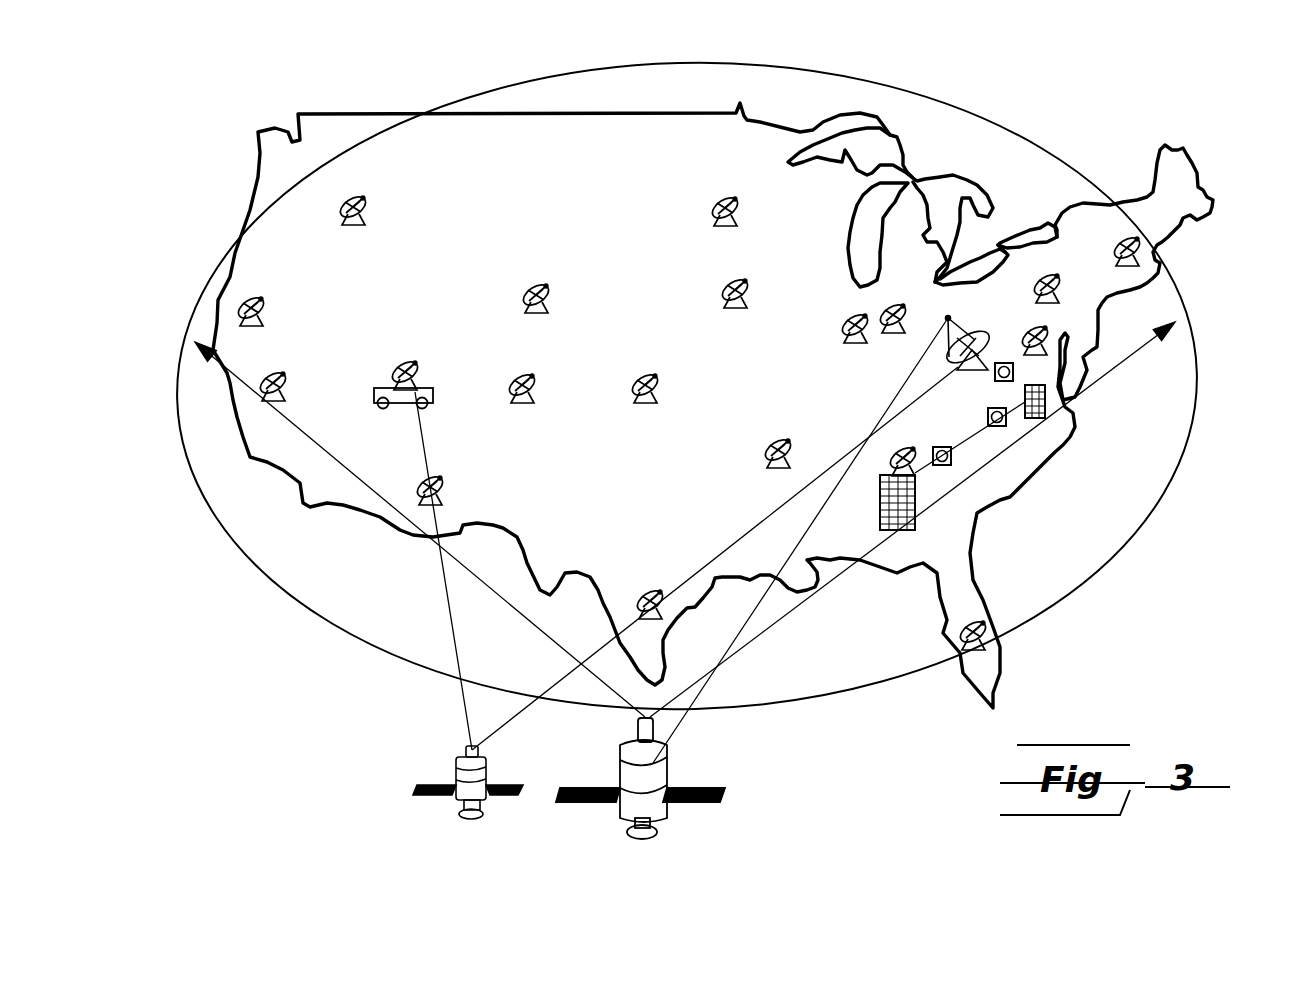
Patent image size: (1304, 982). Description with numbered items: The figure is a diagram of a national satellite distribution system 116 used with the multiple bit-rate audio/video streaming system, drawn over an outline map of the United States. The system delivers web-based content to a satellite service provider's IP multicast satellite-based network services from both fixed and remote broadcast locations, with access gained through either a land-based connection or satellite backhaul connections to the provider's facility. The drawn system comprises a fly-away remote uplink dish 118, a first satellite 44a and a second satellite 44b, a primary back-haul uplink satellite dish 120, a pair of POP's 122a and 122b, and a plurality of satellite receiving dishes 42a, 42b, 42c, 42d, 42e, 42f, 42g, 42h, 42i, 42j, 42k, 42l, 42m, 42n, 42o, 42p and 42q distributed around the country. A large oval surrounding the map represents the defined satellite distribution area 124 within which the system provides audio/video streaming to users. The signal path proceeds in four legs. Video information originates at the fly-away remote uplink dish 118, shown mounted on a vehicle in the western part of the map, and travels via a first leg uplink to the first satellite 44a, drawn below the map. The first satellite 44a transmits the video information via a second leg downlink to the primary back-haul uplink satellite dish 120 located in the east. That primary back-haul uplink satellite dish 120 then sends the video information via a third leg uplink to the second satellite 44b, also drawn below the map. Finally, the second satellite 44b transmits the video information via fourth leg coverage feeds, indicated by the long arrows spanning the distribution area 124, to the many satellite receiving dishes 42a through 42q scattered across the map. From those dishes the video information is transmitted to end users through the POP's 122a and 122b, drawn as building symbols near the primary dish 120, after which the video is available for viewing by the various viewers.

The national satellite distribution system 116 is at (333, 68).
The fly-away remote uplink dish 118 is at (420, 362).
The primary back-haul uplink satellite dish 120 is at (983, 368).
The POP 122a is at (917, 500).
The POP 122b is at (1036, 420).
The satellite distribution area 124 is at (1147, 530).
The satellite receiving dish 42a is at (266, 298).
The satellite receiving dish 42b is at (368, 214).
The satellite receiving dish 42c is at (286, 378).
The satellite receiving dish 42d is at (650, 588).
The satellite receiving dish 42e is at (445, 478).
The satellite receiving dish 42f is at (558, 303).
The satellite receiving dish 42g is at (538, 383).
The satellite receiving dish 42h is at (650, 400).
The satellite receiving dish 42i is at (718, 226).
The satellite receiving dish 42j is at (744, 273).
The satellite receiving dish 42k is at (775, 433).
The satellite receiving dish 42l is at (958, 637).
The satellite receiving dish 42m is at (857, 340).
The satellite receiving dish 42n is at (893, 303).
The satellite receiving dish 42o is at (1031, 325).
The satellite receiving dish 42p is at (1062, 287).
The satellite receiving dish 42q is at (1148, 240).
The first satellite 44a is at (455, 767).
The second satellite 44b is at (660, 828).